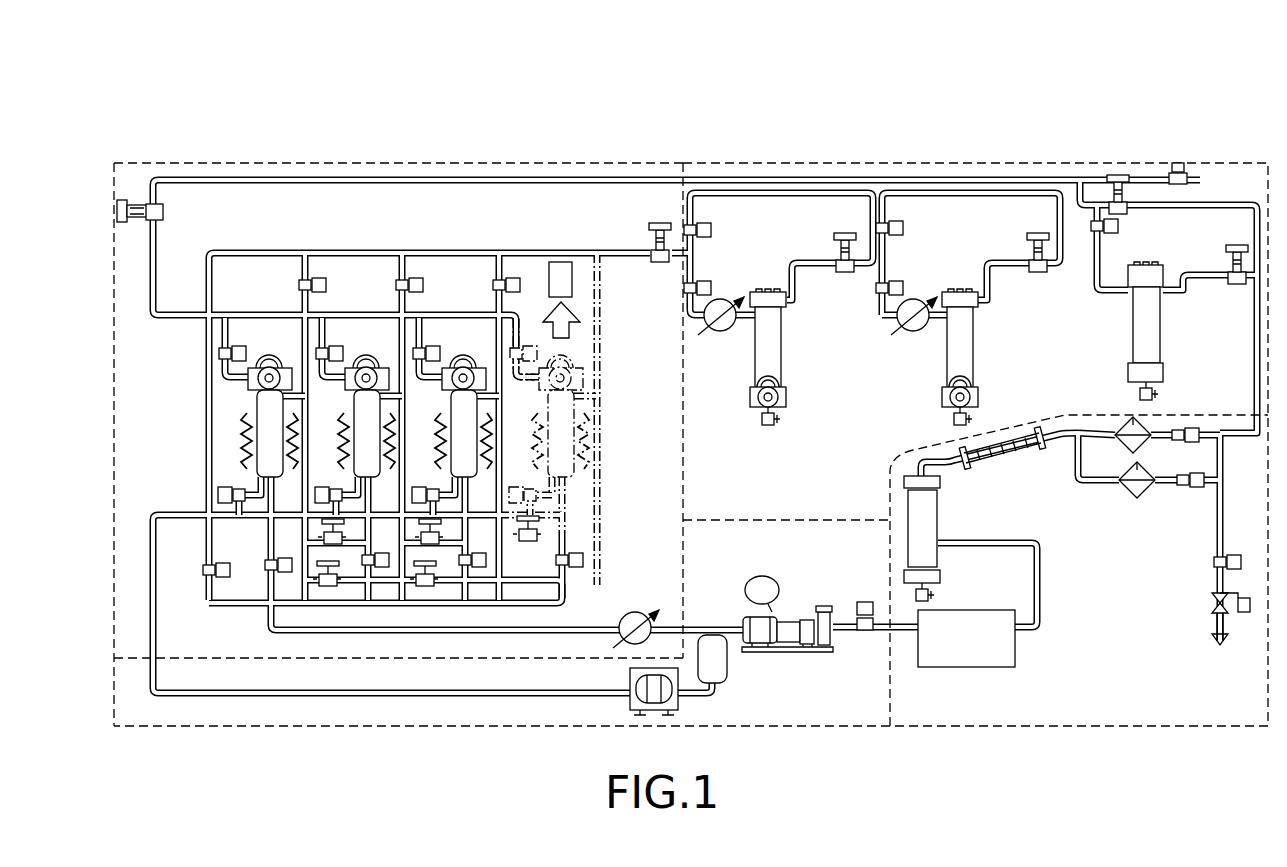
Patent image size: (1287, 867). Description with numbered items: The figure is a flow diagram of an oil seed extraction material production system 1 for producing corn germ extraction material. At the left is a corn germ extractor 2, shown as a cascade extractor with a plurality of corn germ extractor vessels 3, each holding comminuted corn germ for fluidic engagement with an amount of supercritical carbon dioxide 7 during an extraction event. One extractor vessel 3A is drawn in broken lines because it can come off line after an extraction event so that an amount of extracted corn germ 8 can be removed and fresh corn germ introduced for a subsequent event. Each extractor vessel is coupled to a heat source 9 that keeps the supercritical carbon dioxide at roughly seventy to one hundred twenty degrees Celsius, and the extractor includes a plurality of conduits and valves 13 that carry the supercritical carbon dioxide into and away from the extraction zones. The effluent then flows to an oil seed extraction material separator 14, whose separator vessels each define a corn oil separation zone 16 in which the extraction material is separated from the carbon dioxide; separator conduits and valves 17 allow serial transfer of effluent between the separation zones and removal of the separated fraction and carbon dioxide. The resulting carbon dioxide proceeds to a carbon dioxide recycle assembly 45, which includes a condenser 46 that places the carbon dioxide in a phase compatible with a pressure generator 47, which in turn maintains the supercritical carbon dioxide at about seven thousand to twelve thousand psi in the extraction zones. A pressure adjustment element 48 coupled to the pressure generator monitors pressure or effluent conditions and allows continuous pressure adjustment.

The oil seed extraction material production system 1 is at (637, 83).
The corn germ extractor 2 is at (189, 158).
The corn germ extractor vessels 3 is at (275, 444).
The extractor vessel 3A is at (565, 457).
The supercritical carbon dioxide 7 is at (972, 650).
The extracted corn germ 8 is at (567, 294).
The heat source 9 is at (293, 470).
The conduits and valves 13 is at (192, 513).
The oil seed extraction material separator 14 is at (1118, 152).
The corn oil separation zone 16 is at (946, 386).
The separator conduits and valves 17 is at (880, 291).
The carbon dioxide recycle assembly 45 is at (1136, 704).
The condenser 46 is at (1030, 494).
The pressure generator 47 is at (801, 653).
The pressure adjustment element 48 is at (752, 581).